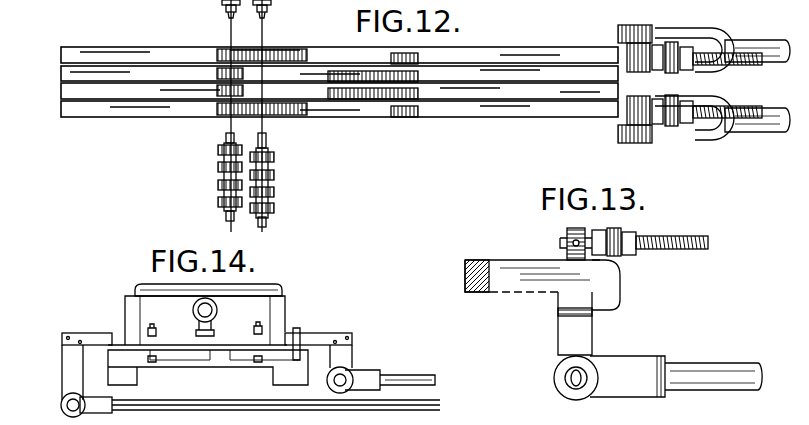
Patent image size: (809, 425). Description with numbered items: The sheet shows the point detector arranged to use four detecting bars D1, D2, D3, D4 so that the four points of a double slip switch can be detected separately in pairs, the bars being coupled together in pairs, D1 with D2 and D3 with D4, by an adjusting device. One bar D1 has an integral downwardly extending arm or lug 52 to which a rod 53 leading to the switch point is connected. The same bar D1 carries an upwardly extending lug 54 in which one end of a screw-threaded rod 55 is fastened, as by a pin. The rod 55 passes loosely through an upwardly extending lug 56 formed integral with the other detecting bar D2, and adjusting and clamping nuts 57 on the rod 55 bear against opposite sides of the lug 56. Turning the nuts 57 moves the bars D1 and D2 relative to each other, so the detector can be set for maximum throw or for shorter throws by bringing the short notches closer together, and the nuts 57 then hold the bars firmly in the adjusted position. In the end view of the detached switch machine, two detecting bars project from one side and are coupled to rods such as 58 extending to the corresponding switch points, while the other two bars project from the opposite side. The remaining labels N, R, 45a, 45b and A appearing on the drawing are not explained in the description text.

In FIG. 12, the detecting bar D1 is at (66, 105).
In FIG. 13, the detecting bar D1 is at (503, 288).
In FIG. 12, the detecting bar D2 is at (66, 90).
In FIG. 13, the detecting bar D2 is at (476, 265).
In FIG. 12, the detecting bar D3 is at (68, 73).
In FIG. 14, the detecting bar D3 is at (318, 338).
In FIG. 12, the detecting bar D4 is at (66, 54).
In FIG. 14, the detecting bar D4 is at (102, 338).
In FIG. 12, the neutral shaft with gear stack N is at (218, 173).
In FIG. 12, the reverse shaft with gear stack R is at (275, 178).
In FIG. 12, the bearing block 45a is at (404, 115).
In FIG. 12, the bearing block 45b is at (290, 52).
In FIG. 12, the downwardly extending arm or lug 52 is at (617, 42).
In FIG. 13, the downwardly extending arm or lug 52 is at (585, 342).
In FIG. 12, the rod 53 is at (783, 78).
In FIG. 13, the rod 53 is at (701, 377).
In FIG. 12, the upwardly extending lug 54 is at (640, 80).
In FIG. 13, the upwardly extending lug 54 is at (572, 230).
In FIG. 12, the screw-threaded rod 55 is at (740, 66).
In FIG. 13, the screw-threaded rod 55 is at (683, 240).
In FIG. 12, the upwardly extending lug 56 is at (675, 100).
In FIG. 13, the upwardly extending lug 56 is at (616, 252).
In FIG. 12, the adjusting and clamping nuts 57 is at (688, 47).
In FIG. 13, the adjusting and clamping nuts 57 is at (630, 234).
In FIG. 14, the housing A is at (150, 284).
In FIG. 14, the rod 58 is at (405, 377).